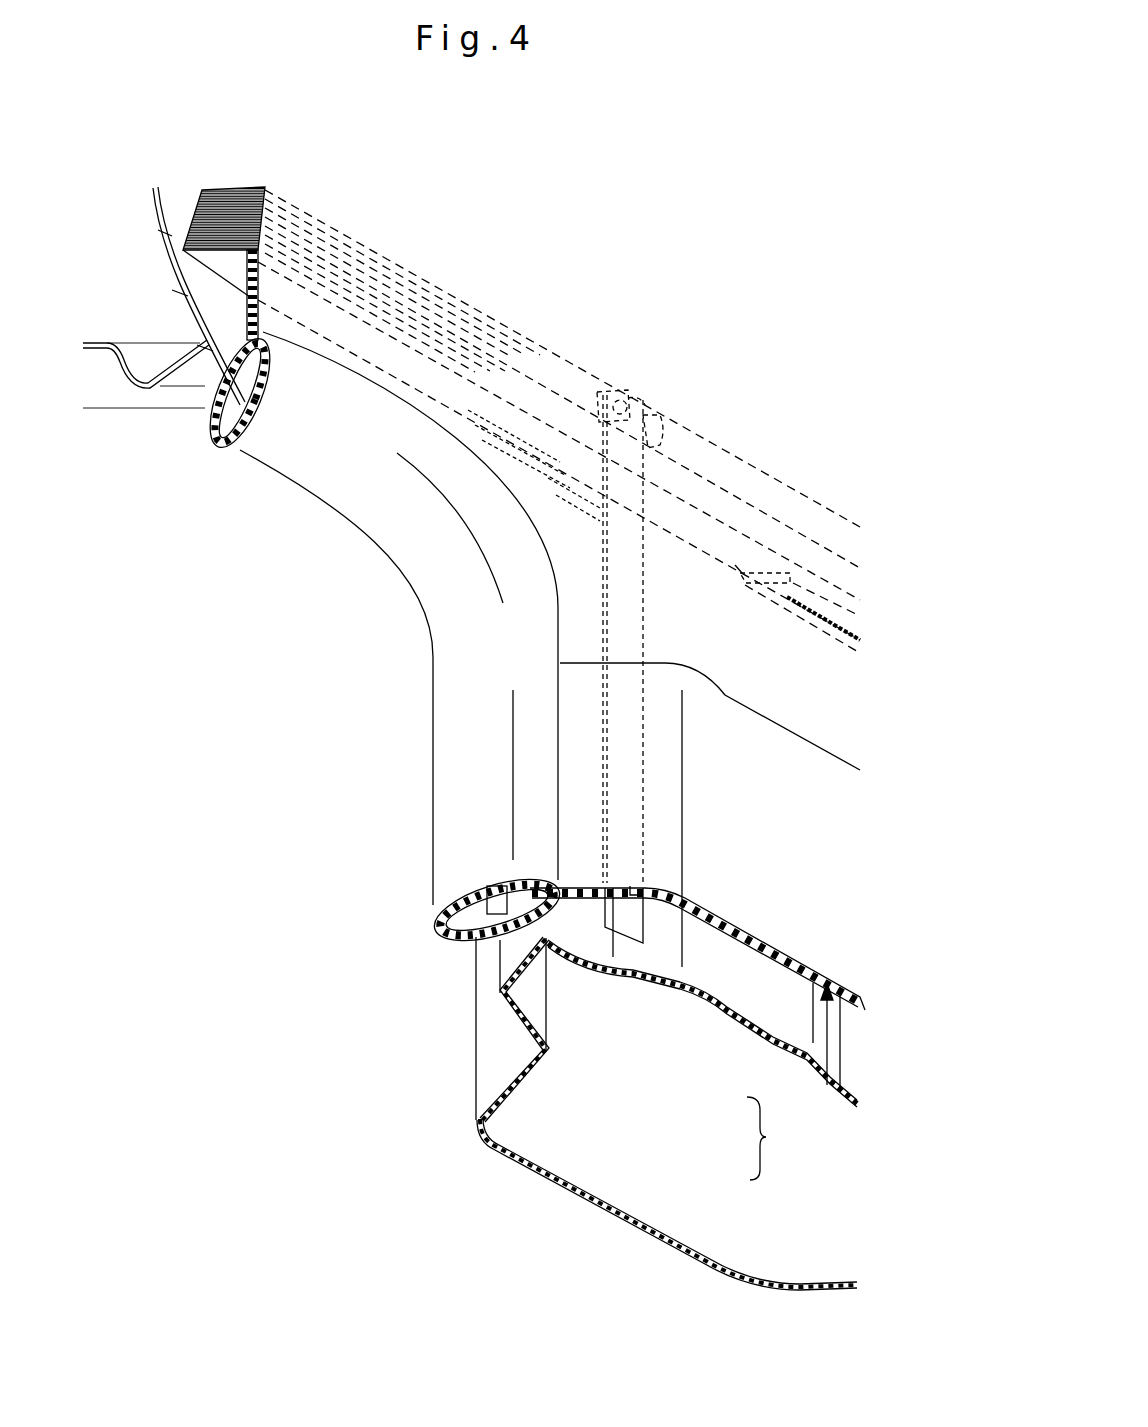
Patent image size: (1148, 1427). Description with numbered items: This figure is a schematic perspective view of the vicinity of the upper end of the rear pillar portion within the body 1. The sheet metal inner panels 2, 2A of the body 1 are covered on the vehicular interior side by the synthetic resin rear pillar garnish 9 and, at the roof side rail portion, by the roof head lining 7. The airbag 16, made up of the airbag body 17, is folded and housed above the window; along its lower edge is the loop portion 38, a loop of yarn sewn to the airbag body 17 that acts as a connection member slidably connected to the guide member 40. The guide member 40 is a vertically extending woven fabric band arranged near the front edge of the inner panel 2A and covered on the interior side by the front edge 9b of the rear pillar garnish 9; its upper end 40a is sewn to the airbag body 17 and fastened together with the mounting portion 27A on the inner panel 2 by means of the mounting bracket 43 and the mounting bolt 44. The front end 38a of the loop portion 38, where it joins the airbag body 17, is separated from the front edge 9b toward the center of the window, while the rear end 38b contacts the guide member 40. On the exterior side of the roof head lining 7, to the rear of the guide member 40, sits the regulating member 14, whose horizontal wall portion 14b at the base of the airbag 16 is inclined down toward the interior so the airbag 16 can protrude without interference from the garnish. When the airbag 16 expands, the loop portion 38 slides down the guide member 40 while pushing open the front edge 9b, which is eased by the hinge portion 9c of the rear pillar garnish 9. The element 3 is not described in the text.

The body 1 is at (769, 1138).
The inner panel 2 is at (217, 276).
The inner panel 2A is at (733, 1013).
The body panel 3 is at (120, 372).
The roof head lining 7 is at (817, 707).
The rear pillar garnish 9 is at (830, 1082).
The front edge of the rear pillar garnish 9b is at (550, 890).
The hinge portion 9c is at (647, 890).
The regulating member 14 is at (782, 628).
The horizontal wall portion 14b is at (763, 603).
The airbag 16 is at (360, 237).
The airbag body 17 is at (521, 420).
The mounting portion 27A is at (610, 393).
The loop portion 38 is at (577, 513).
The front end of the loop portion 38a is at (467, 410).
The rear end of the loop portion 38b is at (647, 537).
The guide member 40 is at (630, 927).
The upper end of the guide member 40a is at (627, 400).
The mounting bracket 43 is at (662, 417).
The mounting bolt 44 is at (640, 405).